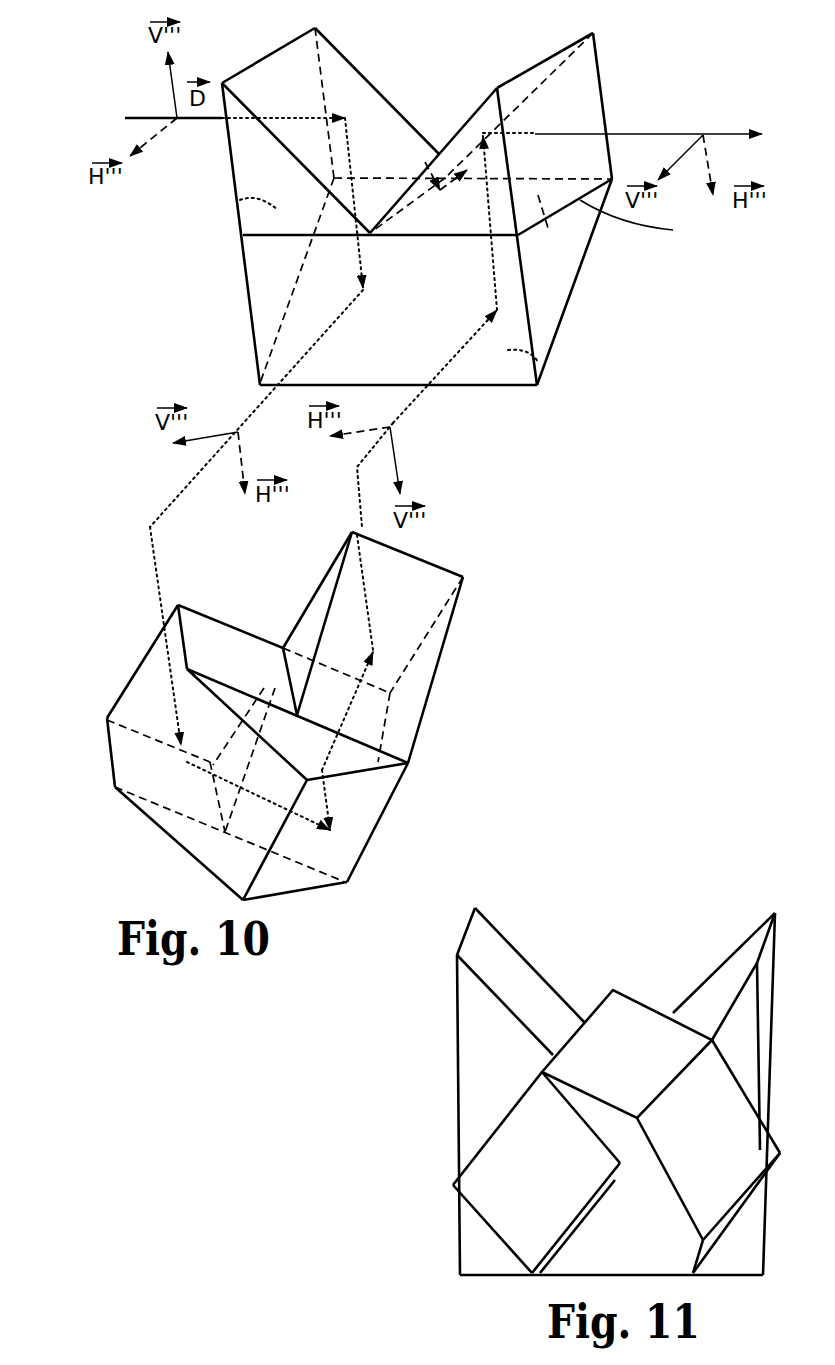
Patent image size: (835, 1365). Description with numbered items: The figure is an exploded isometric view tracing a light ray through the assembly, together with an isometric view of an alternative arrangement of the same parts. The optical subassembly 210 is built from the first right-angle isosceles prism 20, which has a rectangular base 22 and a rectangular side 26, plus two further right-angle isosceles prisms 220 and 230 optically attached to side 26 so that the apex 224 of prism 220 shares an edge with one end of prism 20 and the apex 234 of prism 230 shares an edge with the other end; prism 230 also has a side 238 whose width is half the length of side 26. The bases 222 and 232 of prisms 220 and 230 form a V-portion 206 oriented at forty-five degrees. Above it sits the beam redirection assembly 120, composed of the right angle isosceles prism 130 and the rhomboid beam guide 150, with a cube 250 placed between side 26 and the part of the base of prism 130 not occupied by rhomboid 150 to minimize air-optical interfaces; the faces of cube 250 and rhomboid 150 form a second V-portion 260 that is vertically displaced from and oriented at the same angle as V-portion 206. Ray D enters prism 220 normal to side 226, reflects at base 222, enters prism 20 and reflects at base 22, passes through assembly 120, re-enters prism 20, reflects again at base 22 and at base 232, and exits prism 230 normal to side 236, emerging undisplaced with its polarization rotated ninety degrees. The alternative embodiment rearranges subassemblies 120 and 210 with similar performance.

In FIG. 10, the first right-angle isosceles prism 20 is at (571, 306).
In FIG. 10, the rectangular base 22 is at (547, 357).
In FIG. 10, the rectangular side 26 is at (443, 327).
In FIG. 10, the beam redirection assembly 120 is at (453, 712).
In FIG. 11, the beam redirection assembly 120 is at (615, 988).
In FIG. 10, the right angle isosceles prism 130 is at (326, 897).
In FIG. 10, the rhomboid beam guide 150 is at (454, 620).
In FIG. 10, the V-portion 206 is at (425, 162).
In FIG. 10, the optical subassembly 210 is at (608, 278).
In FIG. 11, the optical subassembly 210 is at (480, 1266).
In FIG. 10, the right-angle isosceles prism 220 is at (233, 187).
In FIG. 10, the base of prism 220 222 is at (297, 57).
In FIG. 10, the apex of prism 220 224 is at (238, 200).
In FIG. 10, the side of prism 220 226 is at (254, 157).
In FIG. 10, the right-angle isosceles prism 230 is at (606, 65).
In FIG. 10, the base of prism 230 232 is at (502, 85).
In FIG. 10, the apex of prism 230 234 is at (650, 223).
In FIG. 10, the side of prism 230 236 is at (587, 105).
In FIG. 10, the side of prism 230 238 is at (555, 200).
In FIG. 10, the cube 250 is at (121, 692).
In FIG. 10, the V-portion 260 is at (277, 673).